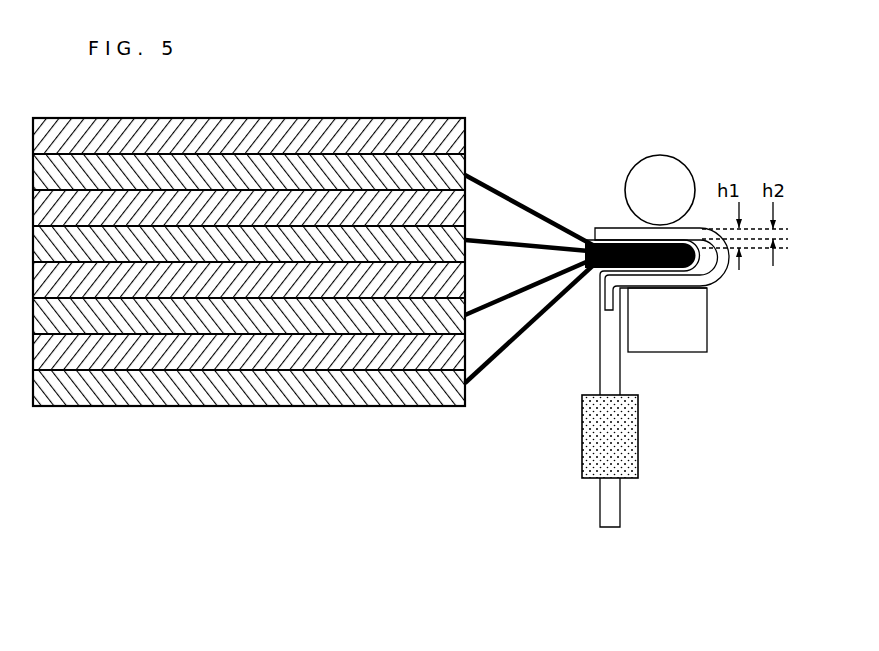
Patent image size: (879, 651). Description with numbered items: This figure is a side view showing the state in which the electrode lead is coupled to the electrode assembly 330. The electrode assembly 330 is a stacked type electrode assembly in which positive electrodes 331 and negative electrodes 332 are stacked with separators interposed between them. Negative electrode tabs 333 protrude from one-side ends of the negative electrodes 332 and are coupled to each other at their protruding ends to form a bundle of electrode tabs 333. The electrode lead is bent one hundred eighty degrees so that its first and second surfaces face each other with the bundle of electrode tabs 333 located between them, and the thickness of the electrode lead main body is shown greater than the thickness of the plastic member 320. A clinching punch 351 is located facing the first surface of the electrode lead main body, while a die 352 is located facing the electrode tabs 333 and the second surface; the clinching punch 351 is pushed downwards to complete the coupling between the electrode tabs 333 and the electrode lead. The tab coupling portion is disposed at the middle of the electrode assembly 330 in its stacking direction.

The electrode assembly 330 is at (249, 347).
The positive electrodes 331 is at (228, 367).
The negative electrodes 332 is at (295, 407).
The negative electrode tabs 333 is at (513, 350).
The plastic member 320 is at (723, 268).
The clinching punch 351 is at (670, 155).
The die 352 is at (687, 352).